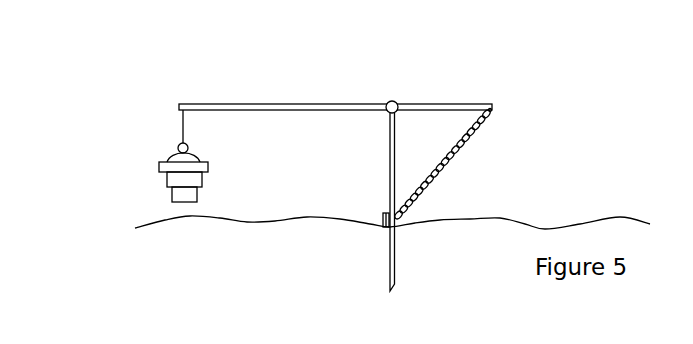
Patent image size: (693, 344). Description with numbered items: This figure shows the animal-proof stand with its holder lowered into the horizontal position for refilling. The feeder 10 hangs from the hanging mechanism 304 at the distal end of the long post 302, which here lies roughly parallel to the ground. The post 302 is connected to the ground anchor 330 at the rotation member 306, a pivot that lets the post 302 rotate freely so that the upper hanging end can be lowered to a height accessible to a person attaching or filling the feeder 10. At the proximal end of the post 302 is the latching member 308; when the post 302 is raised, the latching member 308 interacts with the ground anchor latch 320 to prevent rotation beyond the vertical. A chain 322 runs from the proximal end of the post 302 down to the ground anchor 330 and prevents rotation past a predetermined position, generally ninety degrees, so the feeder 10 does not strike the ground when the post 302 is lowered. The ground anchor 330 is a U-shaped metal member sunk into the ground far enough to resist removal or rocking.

The feeder 10 is at (170, 175).
The post 302 is at (300, 104).
The hanging mechanism 304 is at (182, 129).
The rotation member 306 is at (392, 101).
The latching member 308 is at (491, 108).
The ground anchor latch 320 is at (386, 208).
The chain 322 is at (450, 163).
The ground anchor 330 is at (389, 128).